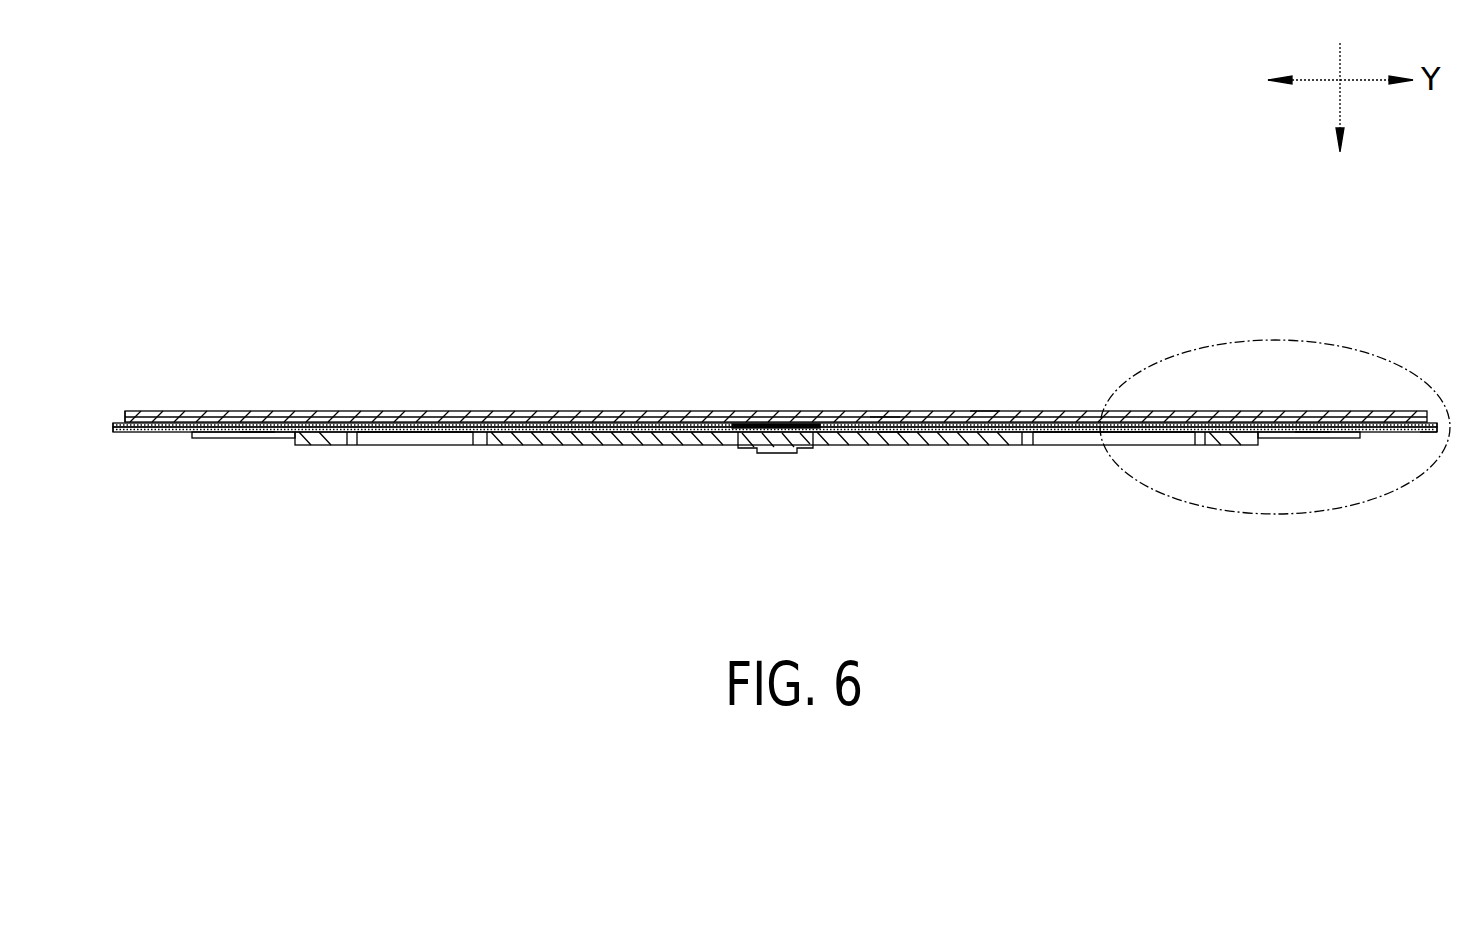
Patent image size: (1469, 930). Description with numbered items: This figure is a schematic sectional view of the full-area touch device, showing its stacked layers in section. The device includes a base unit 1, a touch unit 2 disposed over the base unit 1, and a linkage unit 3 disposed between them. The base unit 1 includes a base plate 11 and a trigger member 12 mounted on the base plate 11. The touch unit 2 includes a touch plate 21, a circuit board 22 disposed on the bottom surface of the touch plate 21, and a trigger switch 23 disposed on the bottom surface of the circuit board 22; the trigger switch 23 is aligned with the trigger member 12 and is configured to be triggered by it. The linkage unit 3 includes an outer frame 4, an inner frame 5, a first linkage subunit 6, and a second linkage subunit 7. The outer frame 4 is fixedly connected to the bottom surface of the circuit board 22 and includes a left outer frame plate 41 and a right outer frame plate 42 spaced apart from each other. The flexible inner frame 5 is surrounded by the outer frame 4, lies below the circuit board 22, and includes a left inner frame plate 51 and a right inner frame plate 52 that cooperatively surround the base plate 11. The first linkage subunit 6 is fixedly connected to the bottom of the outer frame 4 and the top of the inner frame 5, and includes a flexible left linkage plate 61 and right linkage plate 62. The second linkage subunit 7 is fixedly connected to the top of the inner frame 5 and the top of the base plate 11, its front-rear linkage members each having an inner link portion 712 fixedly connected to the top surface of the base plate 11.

The base unit 1 is at (961, 468).
The base plate 11 is at (892, 434).
The trigger member 12 is at (775, 447).
The touch unit 2 is at (643, 408).
The touch plate 21 is at (985, 412).
The circuit board 22 is at (882, 423).
The trigger switch 23 is at (772, 427).
The linkage unit 3 is at (116, 410).
The outer frame 4 is at (1425, 425).
The left outer frame plate 41 is at (127, 433).
The right outer frame plate 42 is at (1410, 417).
The inner frame 5 is at (1342, 437).
The left inner frame plate 51 is at (257, 432).
The right inner frame plate 52 is at (1312, 436).
The first linkage subunit 6 is at (1432, 452).
The left linkage plate 61 is at (206, 438).
The right linkage plate 62 is at (1372, 437).
The second linkage subunit 7 is at (425, 452).
The inner link portion 712 is at (413, 432).